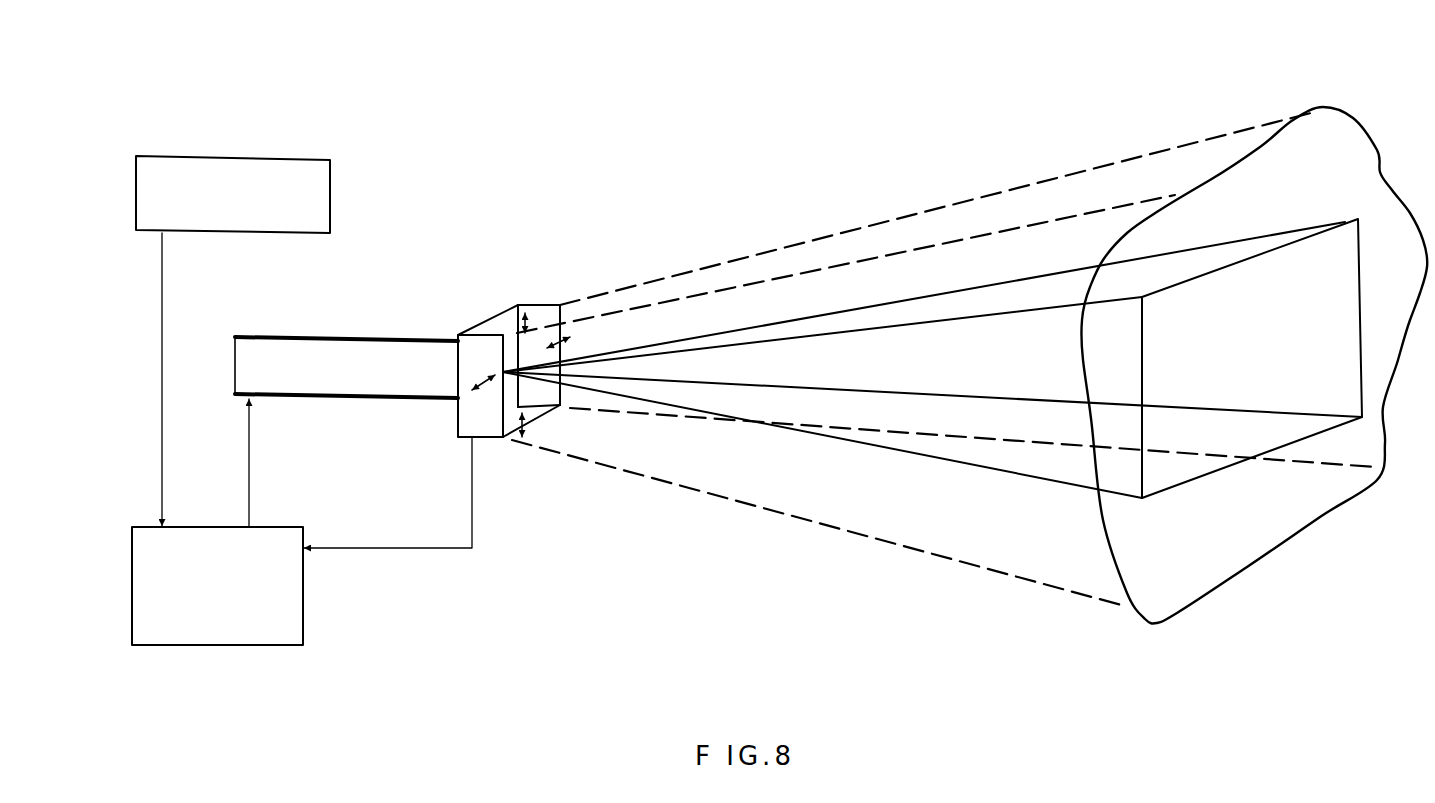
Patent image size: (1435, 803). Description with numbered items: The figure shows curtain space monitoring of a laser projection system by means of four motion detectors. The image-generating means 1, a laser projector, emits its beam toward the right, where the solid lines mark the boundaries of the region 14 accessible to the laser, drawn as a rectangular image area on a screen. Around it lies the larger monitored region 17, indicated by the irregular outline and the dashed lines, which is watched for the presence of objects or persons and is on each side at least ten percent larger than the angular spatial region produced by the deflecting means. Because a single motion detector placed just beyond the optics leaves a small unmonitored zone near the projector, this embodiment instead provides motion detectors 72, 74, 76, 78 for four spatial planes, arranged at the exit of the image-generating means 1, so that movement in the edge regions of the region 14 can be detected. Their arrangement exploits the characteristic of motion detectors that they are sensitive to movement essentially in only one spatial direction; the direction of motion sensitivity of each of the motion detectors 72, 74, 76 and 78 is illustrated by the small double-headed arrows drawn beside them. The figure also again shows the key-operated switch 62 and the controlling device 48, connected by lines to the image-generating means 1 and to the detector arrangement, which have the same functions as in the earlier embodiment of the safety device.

The image-generating means 1 is at (340, 350).
The region accessible to the laser 14 is at (1242, 270).
The monitored region 17 is at (1163, 553).
The controlling device 48 is at (267, 582).
The key-operated switch 62 is at (318, 202).
The motion detector 72 is at (497, 322).
The motion detector 74 is at (572, 335).
The motion detector 76 is at (453, 400).
The motion detector 78 is at (530, 445).